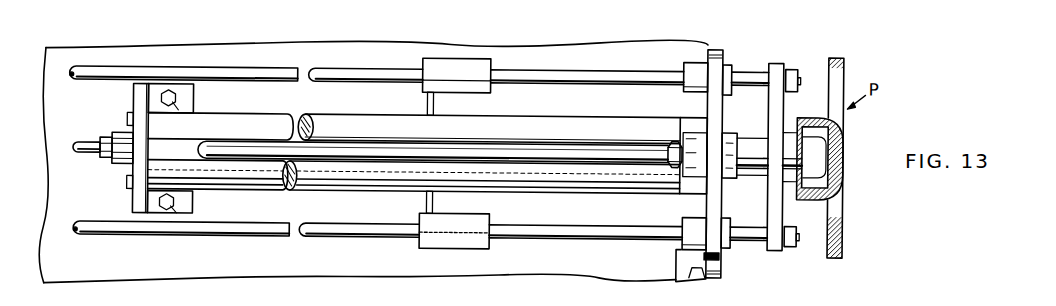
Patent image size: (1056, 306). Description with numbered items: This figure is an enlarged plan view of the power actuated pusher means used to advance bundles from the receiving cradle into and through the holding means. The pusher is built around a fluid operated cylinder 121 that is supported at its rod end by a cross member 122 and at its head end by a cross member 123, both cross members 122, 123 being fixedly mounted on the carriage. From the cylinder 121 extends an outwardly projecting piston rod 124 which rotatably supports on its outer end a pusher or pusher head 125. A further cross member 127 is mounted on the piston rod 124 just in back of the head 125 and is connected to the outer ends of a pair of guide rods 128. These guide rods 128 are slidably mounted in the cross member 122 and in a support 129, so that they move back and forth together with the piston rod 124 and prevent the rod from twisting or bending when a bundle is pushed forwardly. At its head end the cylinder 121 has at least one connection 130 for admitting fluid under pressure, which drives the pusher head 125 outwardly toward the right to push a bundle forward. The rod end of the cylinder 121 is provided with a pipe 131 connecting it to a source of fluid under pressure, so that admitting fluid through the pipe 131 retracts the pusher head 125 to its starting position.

The fluid operated cylinder 121 is at (513, 188).
The cross member 122 is at (714, 199).
The cross member 123 is at (190, 198).
The piston rod 124 is at (752, 173).
The pusher head 125 is at (838, 208).
The cross member 127 is at (771, 248).
The guide rods 128 is at (752, 76).
The support 129 is at (455, 166).
The connection 130 is at (92, 156).
The pipe 131 is at (527, 146).